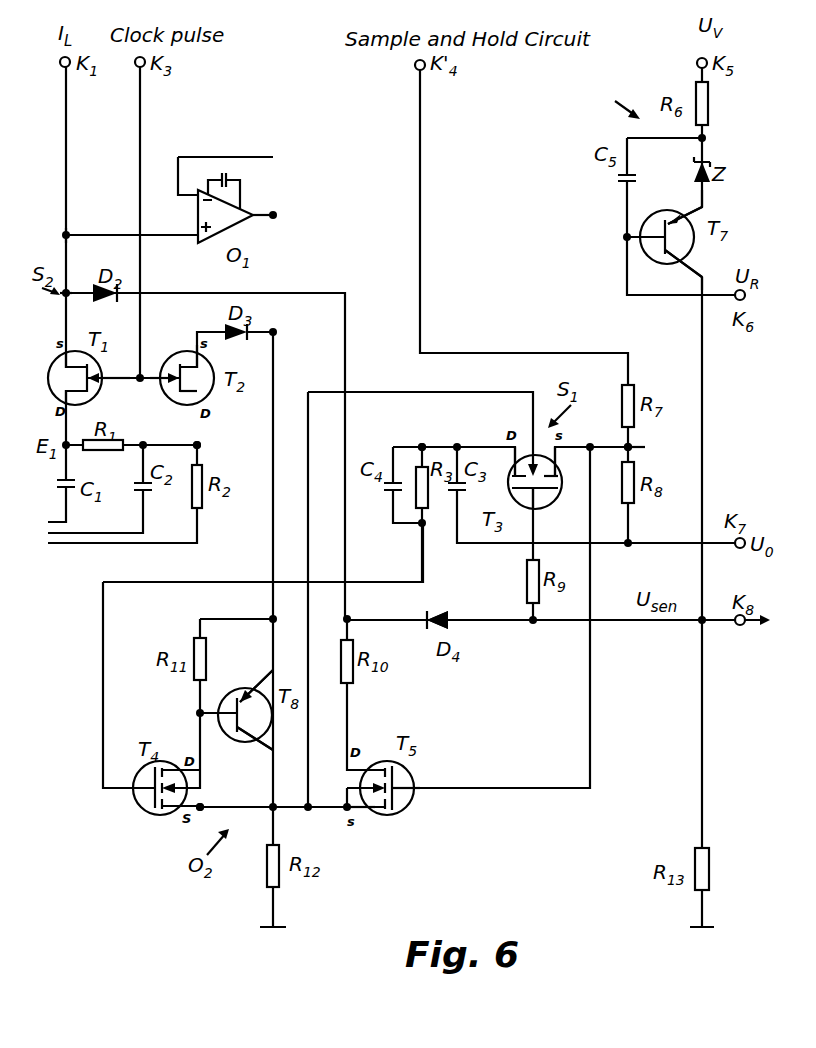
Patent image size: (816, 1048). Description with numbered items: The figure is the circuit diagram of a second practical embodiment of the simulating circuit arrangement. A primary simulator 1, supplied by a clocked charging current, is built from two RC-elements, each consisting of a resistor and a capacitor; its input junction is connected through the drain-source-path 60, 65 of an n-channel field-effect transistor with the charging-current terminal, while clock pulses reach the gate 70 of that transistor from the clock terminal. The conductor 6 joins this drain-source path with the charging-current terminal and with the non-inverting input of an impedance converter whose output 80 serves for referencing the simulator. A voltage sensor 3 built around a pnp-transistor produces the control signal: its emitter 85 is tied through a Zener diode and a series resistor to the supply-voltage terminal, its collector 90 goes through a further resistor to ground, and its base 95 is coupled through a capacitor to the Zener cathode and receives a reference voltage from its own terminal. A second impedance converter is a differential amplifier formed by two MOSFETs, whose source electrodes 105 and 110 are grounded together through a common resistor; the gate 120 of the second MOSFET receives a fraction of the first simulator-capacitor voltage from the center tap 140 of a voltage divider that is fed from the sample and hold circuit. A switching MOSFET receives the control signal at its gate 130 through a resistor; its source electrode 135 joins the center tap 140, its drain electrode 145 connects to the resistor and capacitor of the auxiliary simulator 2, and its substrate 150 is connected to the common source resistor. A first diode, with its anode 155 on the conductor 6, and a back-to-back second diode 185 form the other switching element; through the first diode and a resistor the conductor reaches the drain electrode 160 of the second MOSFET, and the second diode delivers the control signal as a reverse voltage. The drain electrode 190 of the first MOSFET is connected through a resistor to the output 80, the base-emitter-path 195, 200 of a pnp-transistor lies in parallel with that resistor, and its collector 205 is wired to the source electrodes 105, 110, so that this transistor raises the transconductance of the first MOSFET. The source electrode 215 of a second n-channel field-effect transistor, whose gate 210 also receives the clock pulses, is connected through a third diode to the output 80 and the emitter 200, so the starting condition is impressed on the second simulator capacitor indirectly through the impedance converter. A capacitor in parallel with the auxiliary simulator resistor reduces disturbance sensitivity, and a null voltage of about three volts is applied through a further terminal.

The primary simulator 1 is at (206, 442).
The auxiliary simulator 2 is at (446, 436).
The voltage sensor 3 is at (636, 116).
The conductor 6 is at (68, 250).
The drain electrode of field-effect transistor T1 60 is at (58, 393).
The source electrode of field-effect transistor T1 65 is at (62, 348).
The gate of field-effect transistor T1 70 is at (118, 383).
The output of impedance converter O1 80 is at (276, 218).
The emitter of transistor T7 85 is at (698, 206).
The collector of transistor T7 90 is at (678, 248).
The base of transistor T7 95 is at (650, 228).
The source electrode of MOSFET T4 105 is at (200, 805).
The source electrode of MOSFET T5 110 is at (360, 818).
The gate of MOSFET T5 120 is at (407, 803).
The gate of MOSFET T3 130 is at (530, 497).
The source electrode of MOSFET T3 135 is at (560, 462).
The center tap of voltage divider R7, R8 140 is at (632, 447).
The drain electrode of MOSFET T3 145 is at (513, 470).
The substrate of MOSFET T3 150 is at (543, 500).
The anode of diode D2 155 is at (80, 302).
The drain electrode of MOSFET T5 160 is at (380, 765).
The diode D4 185 is at (425, 615).
The drain electrode of MOSFET T4 190 is at (170, 768).
The base of pnp-transistor T8 195 is at (210, 720).
The emitter of pnp-transistor T8 200 is at (250, 702).
The collector of pnp-transistor T8 205 is at (258, 727).
The gate of transistor T2 210 is at (160, 400).
The source electrode of field-effect transistor T2 215 is at (176, 363).